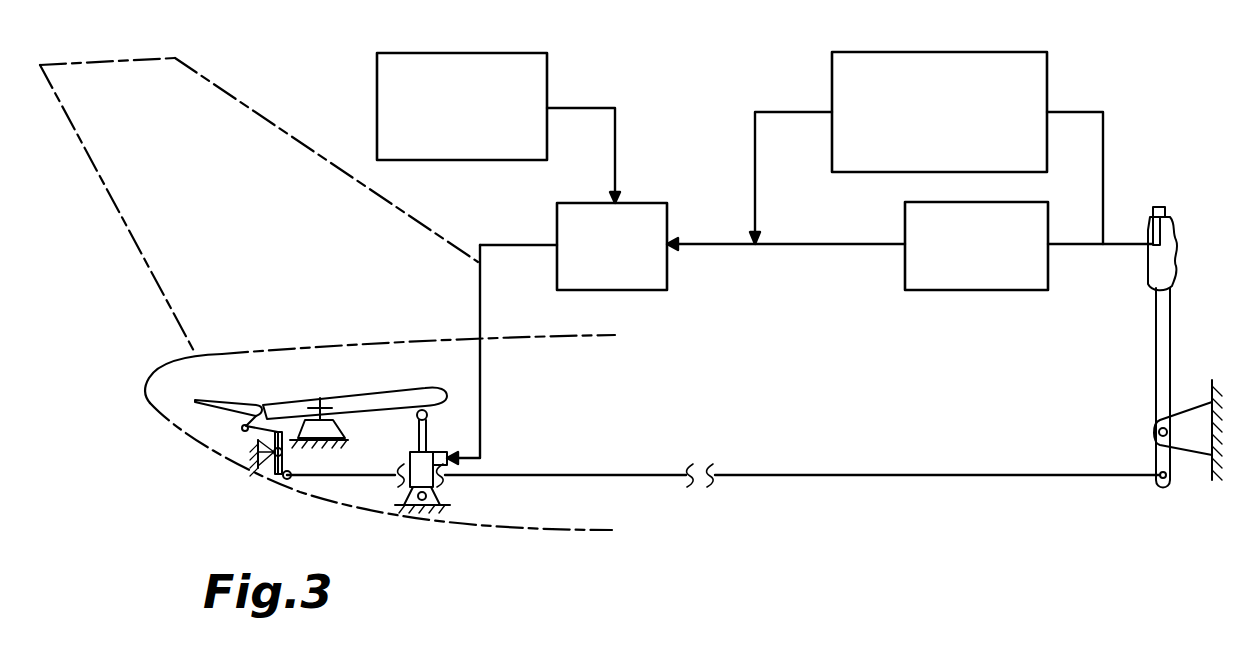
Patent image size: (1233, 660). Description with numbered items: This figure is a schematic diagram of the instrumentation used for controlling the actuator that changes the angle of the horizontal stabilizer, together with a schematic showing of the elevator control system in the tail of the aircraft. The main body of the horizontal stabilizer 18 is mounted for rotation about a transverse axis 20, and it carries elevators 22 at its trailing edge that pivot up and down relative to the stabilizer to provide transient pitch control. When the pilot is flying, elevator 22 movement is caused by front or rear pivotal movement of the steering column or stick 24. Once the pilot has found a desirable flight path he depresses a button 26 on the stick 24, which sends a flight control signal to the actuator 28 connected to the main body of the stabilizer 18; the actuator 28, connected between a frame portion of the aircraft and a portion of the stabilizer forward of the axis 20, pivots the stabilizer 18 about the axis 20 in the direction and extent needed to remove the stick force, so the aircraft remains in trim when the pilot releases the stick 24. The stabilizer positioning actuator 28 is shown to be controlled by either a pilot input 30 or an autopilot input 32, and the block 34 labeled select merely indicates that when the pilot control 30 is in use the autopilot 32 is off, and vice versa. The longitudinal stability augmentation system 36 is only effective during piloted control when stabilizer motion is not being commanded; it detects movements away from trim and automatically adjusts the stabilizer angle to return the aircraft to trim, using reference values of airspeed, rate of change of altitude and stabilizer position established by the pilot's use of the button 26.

The horizontal stabilizer 18 is at (420, 391).
The transverse axis 20 is at (323, 404).
The elevators 22 is at (229, 402).
The steering column 24 is at (1157, 345).
The button 26 is at (1158, 206).
The actuator 28 is at (410, 462).
The pilot input 30 is at (958, 290).
The autopilot input 32 is at (458, 52).
The select block 34 is at (640, 290).
The longitudinal stability augmentation system 36 is at (832, 62).